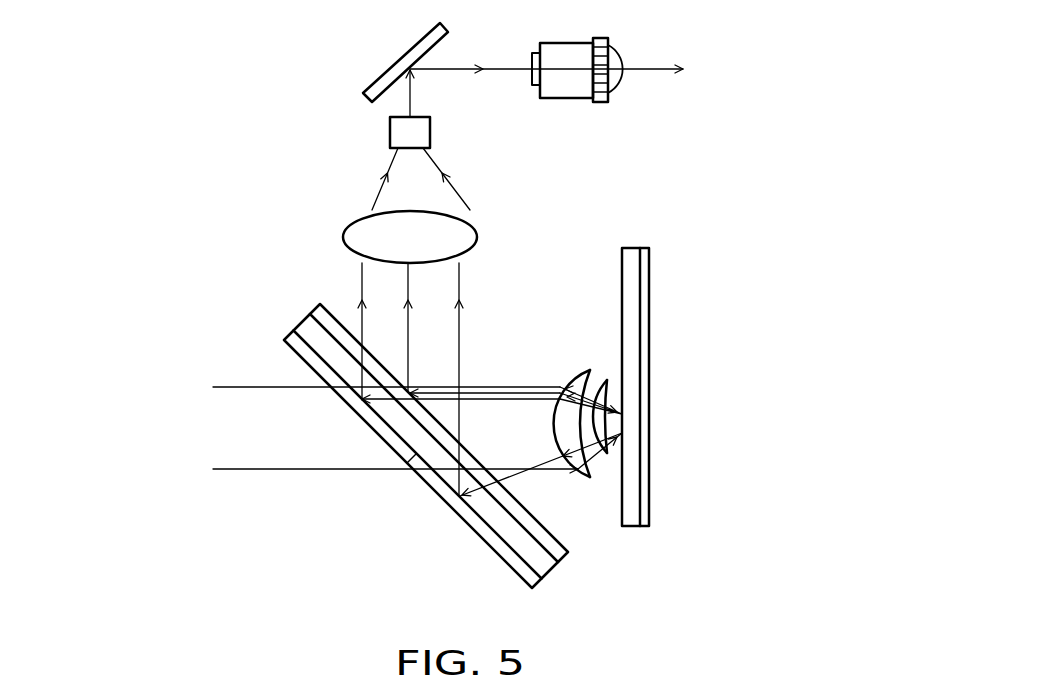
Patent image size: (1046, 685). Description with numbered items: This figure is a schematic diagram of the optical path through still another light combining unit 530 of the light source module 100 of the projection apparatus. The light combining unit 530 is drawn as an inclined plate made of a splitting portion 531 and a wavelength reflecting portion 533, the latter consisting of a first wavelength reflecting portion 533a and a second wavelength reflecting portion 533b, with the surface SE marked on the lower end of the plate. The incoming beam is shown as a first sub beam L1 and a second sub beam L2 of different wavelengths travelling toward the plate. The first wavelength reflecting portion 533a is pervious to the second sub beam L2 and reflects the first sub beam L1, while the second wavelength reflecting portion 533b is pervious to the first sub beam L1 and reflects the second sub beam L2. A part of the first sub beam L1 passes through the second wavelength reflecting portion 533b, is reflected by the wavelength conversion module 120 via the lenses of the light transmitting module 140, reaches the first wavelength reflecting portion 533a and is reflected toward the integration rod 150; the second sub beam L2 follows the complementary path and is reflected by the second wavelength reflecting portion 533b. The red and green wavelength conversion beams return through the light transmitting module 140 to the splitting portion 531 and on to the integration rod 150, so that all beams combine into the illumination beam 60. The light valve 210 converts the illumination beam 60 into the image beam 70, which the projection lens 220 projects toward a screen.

The light source module 100 is at (733, 601).
The wavelength conversion module 120 is at (633, 237).
The light transmitting module 140 is at (604, 378).
The integration rod 150 is at (390, 132).
The light valve 210 is at (420, 50).
The projection lens 220 is at (568, 53).
The illumination beam 60 is at (410, 95).
The image beam 70 is at (508, 67).
The light combining unit 530 is at (436, 413).
The splitting portion 531 is at (550, 540).
The wavelength reflecting portion 533 is at (421, 451).
The first wavelength reflecting portion 533a is at (390, 435).
The second wavelength reflecting portion 533b is at (482, 528).
The surface SE is at (548, 565).
The first sub beam L1 is at (358, 281).
The second sub beam L2 is at (462, 282).